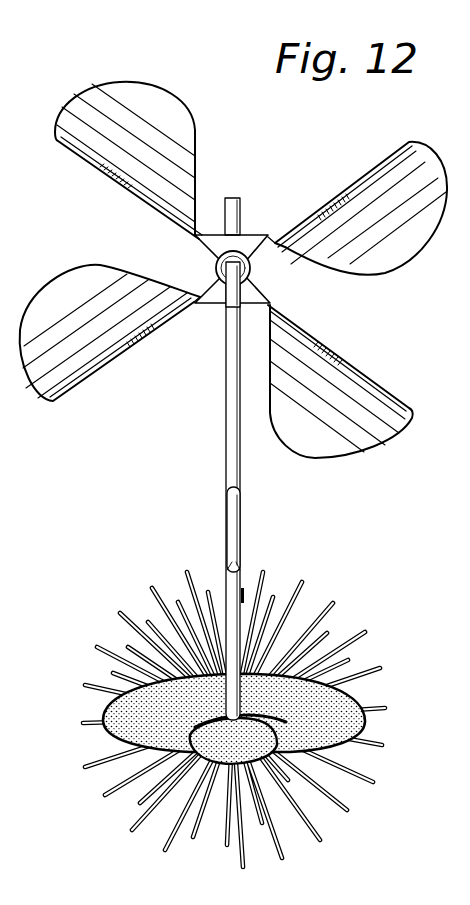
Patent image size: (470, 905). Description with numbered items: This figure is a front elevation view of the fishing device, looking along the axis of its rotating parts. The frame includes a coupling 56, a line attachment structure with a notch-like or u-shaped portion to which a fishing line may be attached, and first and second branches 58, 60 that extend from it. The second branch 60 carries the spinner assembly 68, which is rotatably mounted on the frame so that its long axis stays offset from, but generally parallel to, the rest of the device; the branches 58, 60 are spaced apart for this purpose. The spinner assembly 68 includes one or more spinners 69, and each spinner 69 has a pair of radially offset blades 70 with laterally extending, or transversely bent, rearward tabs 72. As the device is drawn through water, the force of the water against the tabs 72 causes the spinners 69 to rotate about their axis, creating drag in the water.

The coupling 56 is at (242, 511).
The first branch 58 is at (251, 576).
The second branch 60 is at (219, 456).
The spinner assembly 68 is at (403, 309).
The spinner 69 is at (292, 214).
The blade 70 is at (118, 188).
The rearward tab 72 is at (163, 107).